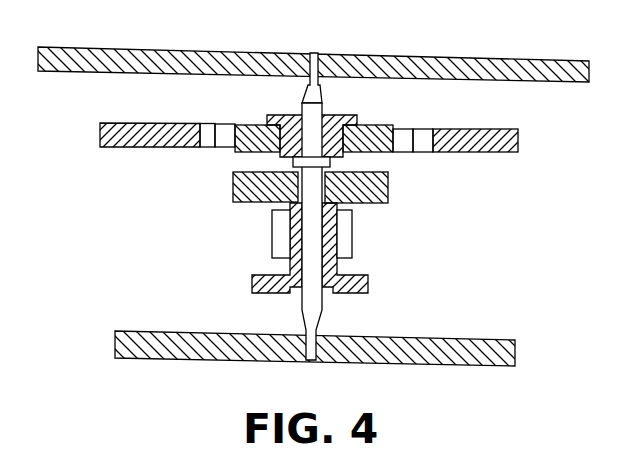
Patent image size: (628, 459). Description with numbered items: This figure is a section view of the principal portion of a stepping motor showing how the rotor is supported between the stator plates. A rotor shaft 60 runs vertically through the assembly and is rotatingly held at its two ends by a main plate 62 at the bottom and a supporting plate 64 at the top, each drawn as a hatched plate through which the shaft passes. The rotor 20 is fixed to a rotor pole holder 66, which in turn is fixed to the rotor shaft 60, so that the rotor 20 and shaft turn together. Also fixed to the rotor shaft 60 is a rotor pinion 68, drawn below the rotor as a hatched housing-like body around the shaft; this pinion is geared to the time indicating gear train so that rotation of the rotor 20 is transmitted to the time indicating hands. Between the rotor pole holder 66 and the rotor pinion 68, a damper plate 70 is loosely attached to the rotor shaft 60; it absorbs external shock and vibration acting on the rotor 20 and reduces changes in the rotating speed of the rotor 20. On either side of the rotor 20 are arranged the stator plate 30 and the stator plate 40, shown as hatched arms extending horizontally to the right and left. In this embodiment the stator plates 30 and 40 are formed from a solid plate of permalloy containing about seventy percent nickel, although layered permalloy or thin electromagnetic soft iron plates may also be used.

The rotor 20 is at (381, 152).
The stator plate 30 is at (490, 152).
The stator plate 40 is at (138, 148).
The rotor shaft 60 is at (308, 112).
The main plate 62 is at (403, 360).
The supporting plate 64 is at (396, 57).
The rotor pole holder 66 is at (339, 117).
The rotor pinion 68 is at (338, 230).
The damper plate 70 is at (240, 187).